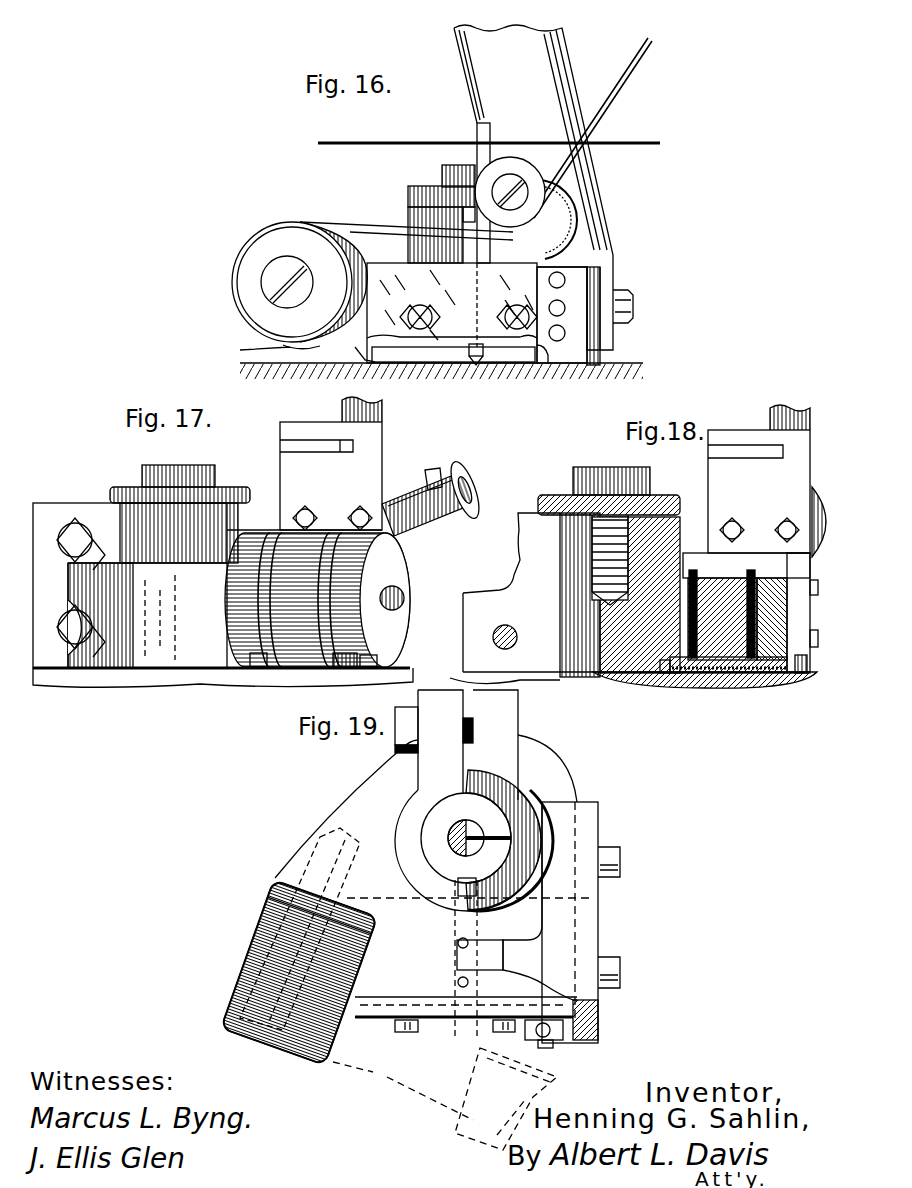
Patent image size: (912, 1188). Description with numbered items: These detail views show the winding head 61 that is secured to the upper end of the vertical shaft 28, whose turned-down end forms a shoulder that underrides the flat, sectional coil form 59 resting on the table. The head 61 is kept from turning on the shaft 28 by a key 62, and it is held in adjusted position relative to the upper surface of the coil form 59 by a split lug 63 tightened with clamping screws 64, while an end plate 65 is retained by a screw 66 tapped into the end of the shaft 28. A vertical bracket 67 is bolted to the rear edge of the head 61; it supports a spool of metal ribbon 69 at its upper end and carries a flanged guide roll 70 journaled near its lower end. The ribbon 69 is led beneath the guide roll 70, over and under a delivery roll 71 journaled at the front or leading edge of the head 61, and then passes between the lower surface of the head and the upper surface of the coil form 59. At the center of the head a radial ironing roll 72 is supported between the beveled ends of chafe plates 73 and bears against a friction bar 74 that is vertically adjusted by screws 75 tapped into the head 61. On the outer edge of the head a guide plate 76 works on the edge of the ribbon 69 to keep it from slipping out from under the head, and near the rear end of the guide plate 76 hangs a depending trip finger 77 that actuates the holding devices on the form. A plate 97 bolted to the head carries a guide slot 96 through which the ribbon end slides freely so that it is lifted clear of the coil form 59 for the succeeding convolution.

In FIG. 18, the vertical shaft 28 is at (560, 610).
In FIG. 19, the vertical shaft 28 is at (430, 832).
In FIG. 16, the coil form 59 is at (292, 370).
In FIG. 17, the coil form 59 is at (125, 680).
In FIG. 18, the coil form 59 is at (687, 690).
In FIG. 16, the winding head 61 is at (427, 345).
In FIG. 17, the winding head 61 is at (130, 585).
In FIG. 18, the winding head 61 is at (683, 523).
In FIG. 19, the winding head 61 is at (560, 785).
In FIG. 19, the key 62 is at (458, 895).
In FIG. 17, the split lug 63 is at (63, 510).
In FIG. 18, the split lug 63 is at (522, 577).
In FIG. 19, the split lug 63 is at (482, 693).
In FIG. 17, the clamping screws 64 is at (68, 615).
In FIG. 18, the clamping screws 64 is at (513, 645).
In FIG. 19, the clamping screws 64 is at (410, 740).
In FIG. 16, the end plate 65 is at (408, 193).
In FIG. 17, the end plate 65 is at (235, 490).
In FIG. 18, the end plate 65 is at (548, 495).
In FIG. 19, the end plate 65 is at (503, 890).
In FIG. 16, the screw 66 is at (442, 175).
In FIG. 17, the screw 66 is at (145, 470).
In FIG. 18, the screw 66 is at (600, 475).
In FIG. 19, the screw 66 is at (452, 828).
In FIG. 16, the vertical bracket 67 is at (533, 187).
In FIG. 17, the vertical bracket 67 is at (382, 410).
In FIG. 18, the vertical bracket 67 is at (790, 412).
In FIG. 19, the vertical bracket 67 is at (590, 897).
In FIG. 16, the metal ribbon 69 is at (600, 127).
In FIG. 17, the metal ribbon 69 is at (465, 455).
In FIG. 18, the metal ribbon 69 is at (730, 680).
In FIG. 19, the metal ribbon 69 is at (373, 1074).
In FIG. 16, the flanged guide roll 70 is at (510, 160).
In FIG. 17, the flanged guide roll 70 is at (433, 497).
In FIG. 18, the flanged guide roll 70 is at (810, 505).
In FIG. 19, the flanged guide roll 70 is at (457, 1133).
In FIG. 16, the delivery roll 71 is at (240, 300).
In FIG. 17, the delivery roll 71 is at (407, 600).
In FIG. 19, the delivery roll 71 is at (270, 908).
In FIG. 16, the ironing roll 72 is at (475, 360).
In FIG. 18, the ironing roll 72 is at (700, 688).
In FIG. 16, the chafe plates 73 is at (515, 362).
In FIG. 16, the friction bar 74 is at (468, 352).
In FIG. 18, the friction bar 74 is at (765, 675).
In FIG. 16, the screws 75 is at (480, 263).
In FIG. 18, the screws 75 is at (692, 572).
In FIG. 19, the screws 75 is at (458, 943).
In FIG. 16, the guide plate 76 is at (362, 358).
In FIG. 17, the guide plate 76 is at (348, 670).
In FIG. 18, the guide plate 76 is at (780, 585).
In FIG. 19, the guide plate 76 is at (433, 1019).
In FIG. 16, the trip finger 77 is at (562, 365).
In FIG. 17, the trip finger 77 is at (377, 660).
In FIG. 18, the trip finger 77 is at (815, 680).
In FIG. 19, the trip finger 77 is at (560, 1040).
In FIG. 17, the guide slot 96 is at (313, 443).
In FIG. 18, the guide slot 96 is at (732, 450).
In FIG. 16, the plate 97 is at (477, 153).
In FIG. 17, the plate 97 is at (382, 470).
In FIG. 18, the plate 97 is at (759, 491).